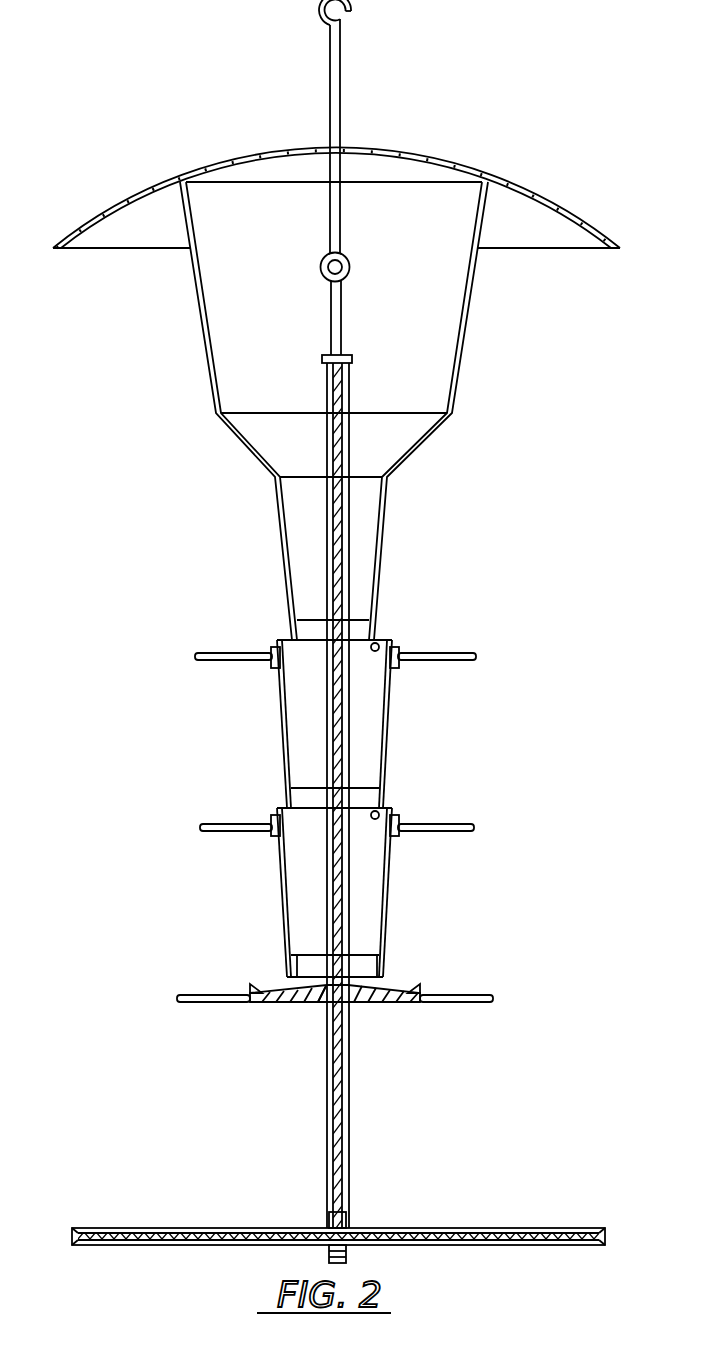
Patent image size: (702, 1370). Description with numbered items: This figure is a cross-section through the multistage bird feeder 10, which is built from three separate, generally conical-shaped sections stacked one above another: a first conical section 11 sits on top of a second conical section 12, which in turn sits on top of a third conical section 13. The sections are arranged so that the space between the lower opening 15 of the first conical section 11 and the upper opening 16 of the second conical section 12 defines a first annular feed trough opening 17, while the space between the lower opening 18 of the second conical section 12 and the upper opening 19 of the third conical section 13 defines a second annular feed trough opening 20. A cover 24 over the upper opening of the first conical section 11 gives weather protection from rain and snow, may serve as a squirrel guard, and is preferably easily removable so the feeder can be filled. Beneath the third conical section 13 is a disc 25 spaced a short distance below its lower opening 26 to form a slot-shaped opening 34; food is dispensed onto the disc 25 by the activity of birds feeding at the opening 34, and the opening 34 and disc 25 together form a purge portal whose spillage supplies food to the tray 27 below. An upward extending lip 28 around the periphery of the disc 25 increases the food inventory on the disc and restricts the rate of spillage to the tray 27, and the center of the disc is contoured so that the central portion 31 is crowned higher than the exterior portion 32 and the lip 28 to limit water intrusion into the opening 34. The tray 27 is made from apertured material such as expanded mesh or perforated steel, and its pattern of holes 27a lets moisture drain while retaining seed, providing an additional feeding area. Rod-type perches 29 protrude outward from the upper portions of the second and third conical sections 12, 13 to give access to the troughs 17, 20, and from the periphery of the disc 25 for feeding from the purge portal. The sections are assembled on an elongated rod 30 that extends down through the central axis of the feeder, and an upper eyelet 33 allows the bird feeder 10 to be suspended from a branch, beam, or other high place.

The bird feeder 10 is at (138, 463).
The first conical section 11 is at (386, 522).
The second conical section 12 is at (390, 727).
The third conical section 13 is at (388, 900).
The lower opening 15 is at (379, 644).
The upper opening 16 is at (282, 640).
The first annular feed trough opening 17 is at (292, 630).
The lower opening 18 is at (379, 812).
The upper opening 19 is at (282, 808).
The second annular feed trough opening 20 is at (292, 800).
The cover 24 is at (131, 200).
The disc 25 is at (378, 1004).
The lower opening 26 is at (386, 976).
The tray 27 is at (572, 1228).
The holes 27a is at (500, 1228).
The lip 28 is at (422, 988).
The perches 29 is at (463, 655).
The elongated rod 30 is at (344, 400).
The central portion 31 is at (313, 990).
The exterior portion 32 is at (256, 988).
The upper eyelet 33 is at (352, 10).
The slot-shaped opening 34 is at (292, 975).